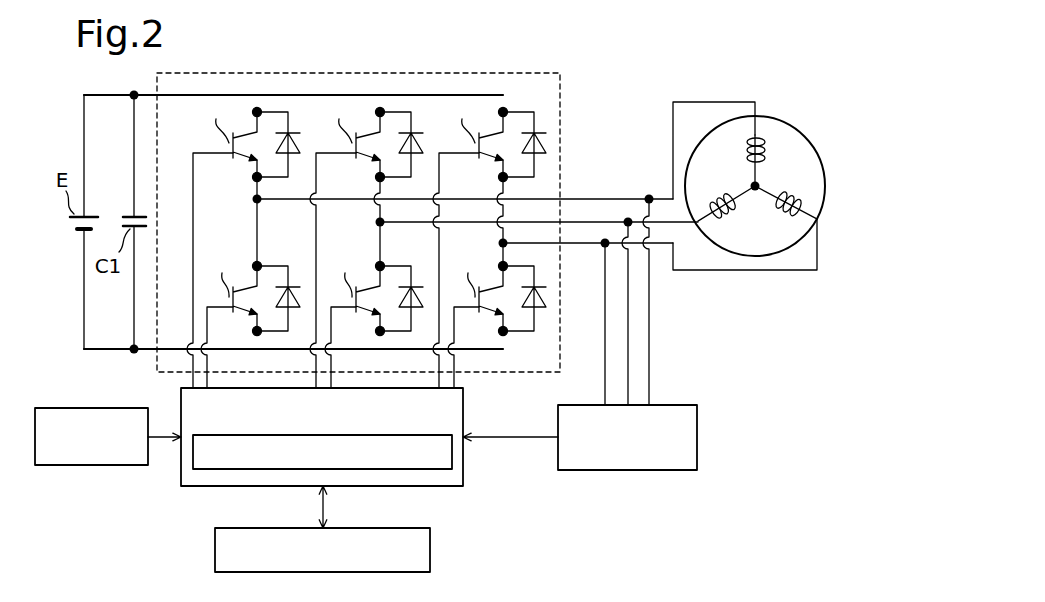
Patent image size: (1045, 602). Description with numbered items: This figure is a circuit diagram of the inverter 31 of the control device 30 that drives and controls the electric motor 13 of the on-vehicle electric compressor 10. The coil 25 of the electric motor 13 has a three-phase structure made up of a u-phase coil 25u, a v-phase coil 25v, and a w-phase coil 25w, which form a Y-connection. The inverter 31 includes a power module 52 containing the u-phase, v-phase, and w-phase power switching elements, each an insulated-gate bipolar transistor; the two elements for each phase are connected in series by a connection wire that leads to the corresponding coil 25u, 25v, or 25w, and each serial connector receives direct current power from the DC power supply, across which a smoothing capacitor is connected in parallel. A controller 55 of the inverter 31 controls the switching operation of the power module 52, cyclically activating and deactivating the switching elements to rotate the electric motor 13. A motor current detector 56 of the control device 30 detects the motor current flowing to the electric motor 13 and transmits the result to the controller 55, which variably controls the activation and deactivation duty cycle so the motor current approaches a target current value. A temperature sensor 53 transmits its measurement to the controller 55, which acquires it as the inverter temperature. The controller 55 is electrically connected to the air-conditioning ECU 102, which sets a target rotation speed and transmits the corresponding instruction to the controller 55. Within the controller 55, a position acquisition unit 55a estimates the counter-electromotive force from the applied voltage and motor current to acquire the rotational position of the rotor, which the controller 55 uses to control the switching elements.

The on-vehicle electric compressor 10 is at (736, 145).
The electric motor 13 is at (755, 163).
The coil 25 is at (755, 163).
The u-phase coil 25u is at (764, 143).
The v-phase coil 25v is at (719, 196).
The w-phase coil 25w is at (782, 214).
The control device 30 is at (732, 157).
The inverter 31 is at (648, 83).
The power module 52 is at (407, 72).
The temperature sensor 53 is at (92, 465).
The controller 55 is at (349, 437).
The position acquisition unit 55a is at (452, 455).
The motor current detector 56 is at (627, 470).
The air-conditioning ECU 102 is at (215, 549).